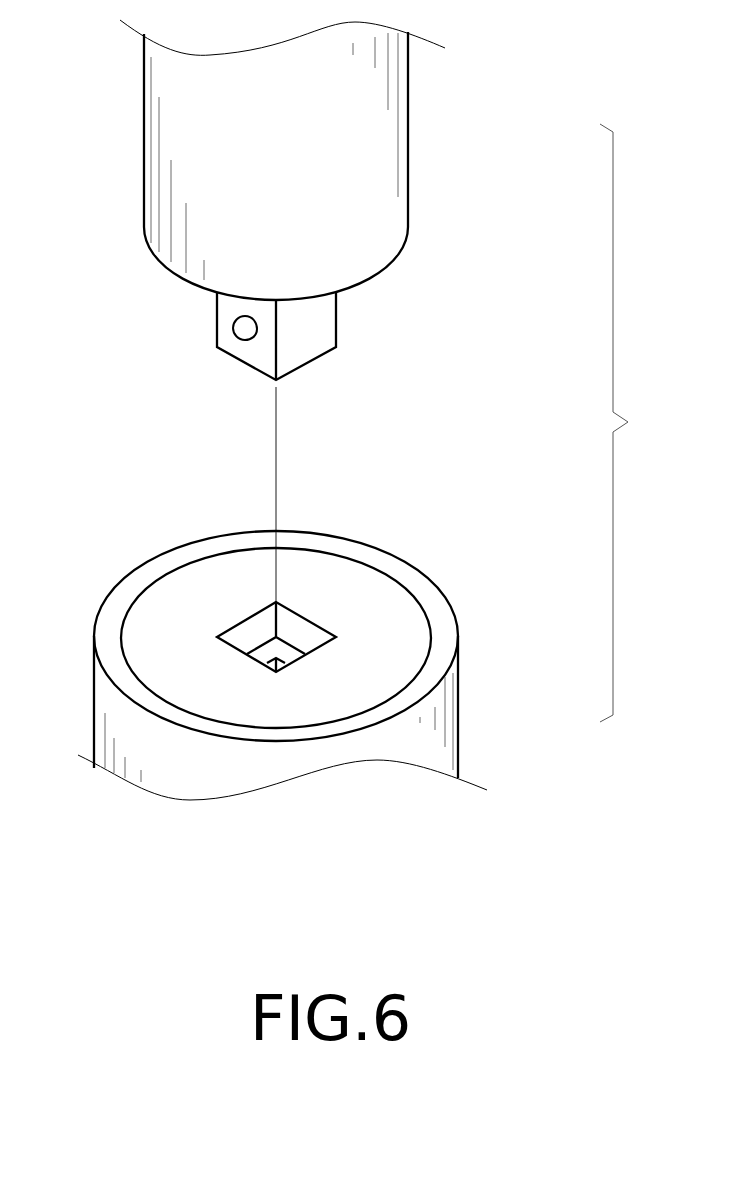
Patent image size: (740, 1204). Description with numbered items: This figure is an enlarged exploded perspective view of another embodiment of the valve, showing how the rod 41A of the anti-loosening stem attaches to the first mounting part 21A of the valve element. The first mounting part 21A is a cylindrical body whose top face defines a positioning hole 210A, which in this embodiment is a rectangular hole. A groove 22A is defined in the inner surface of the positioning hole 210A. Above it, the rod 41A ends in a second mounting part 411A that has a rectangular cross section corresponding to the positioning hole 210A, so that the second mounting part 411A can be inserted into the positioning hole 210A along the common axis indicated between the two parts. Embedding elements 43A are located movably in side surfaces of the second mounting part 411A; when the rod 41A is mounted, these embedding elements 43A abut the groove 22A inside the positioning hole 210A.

The rod 41A is at (385, 144).
The second mounting part 411A is at (315, 320).
The embedding element 43A is at (242, 330).
The first mounting part 21A is at (445, 732).
The positioning hole 210A is at (305, 633).
The groove 22A is at (263, 653).